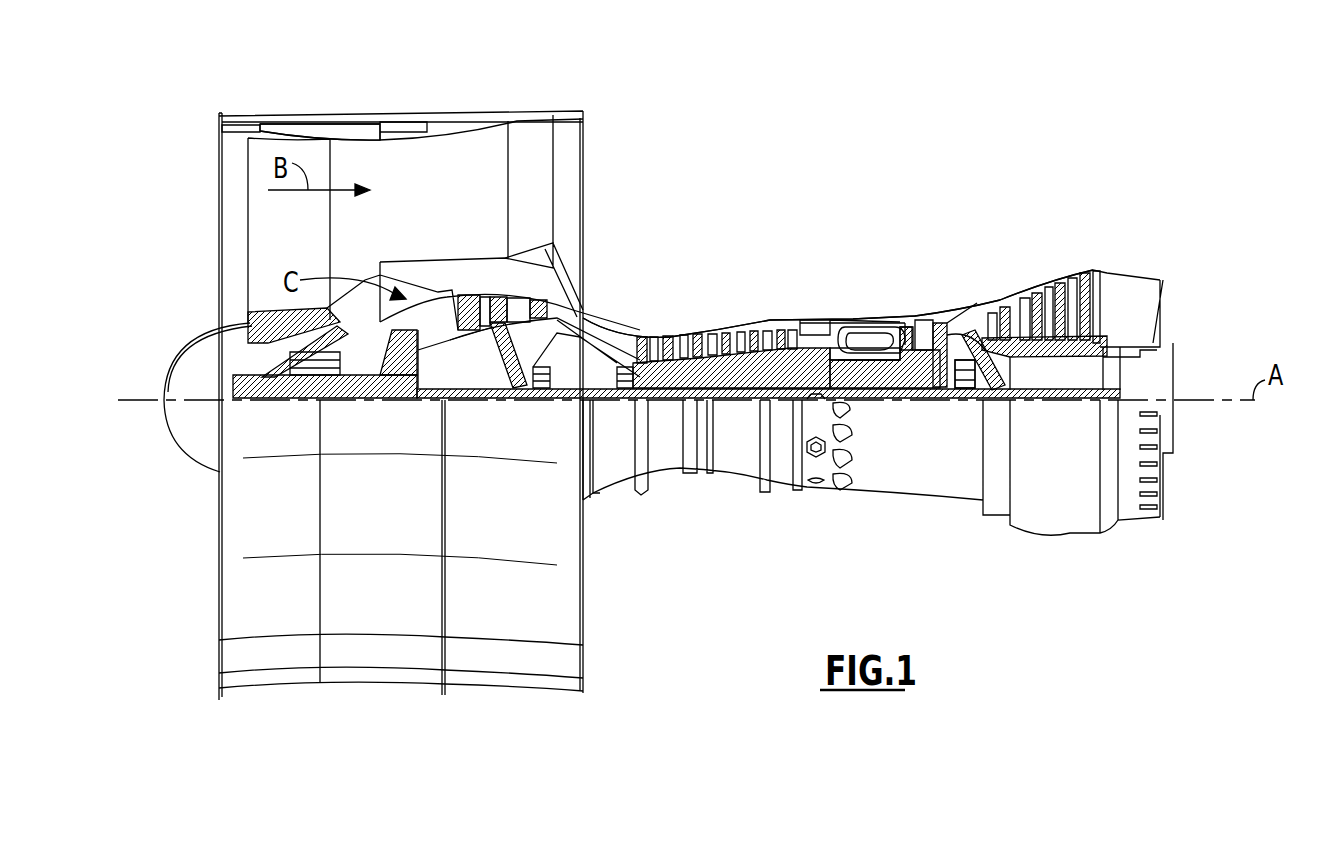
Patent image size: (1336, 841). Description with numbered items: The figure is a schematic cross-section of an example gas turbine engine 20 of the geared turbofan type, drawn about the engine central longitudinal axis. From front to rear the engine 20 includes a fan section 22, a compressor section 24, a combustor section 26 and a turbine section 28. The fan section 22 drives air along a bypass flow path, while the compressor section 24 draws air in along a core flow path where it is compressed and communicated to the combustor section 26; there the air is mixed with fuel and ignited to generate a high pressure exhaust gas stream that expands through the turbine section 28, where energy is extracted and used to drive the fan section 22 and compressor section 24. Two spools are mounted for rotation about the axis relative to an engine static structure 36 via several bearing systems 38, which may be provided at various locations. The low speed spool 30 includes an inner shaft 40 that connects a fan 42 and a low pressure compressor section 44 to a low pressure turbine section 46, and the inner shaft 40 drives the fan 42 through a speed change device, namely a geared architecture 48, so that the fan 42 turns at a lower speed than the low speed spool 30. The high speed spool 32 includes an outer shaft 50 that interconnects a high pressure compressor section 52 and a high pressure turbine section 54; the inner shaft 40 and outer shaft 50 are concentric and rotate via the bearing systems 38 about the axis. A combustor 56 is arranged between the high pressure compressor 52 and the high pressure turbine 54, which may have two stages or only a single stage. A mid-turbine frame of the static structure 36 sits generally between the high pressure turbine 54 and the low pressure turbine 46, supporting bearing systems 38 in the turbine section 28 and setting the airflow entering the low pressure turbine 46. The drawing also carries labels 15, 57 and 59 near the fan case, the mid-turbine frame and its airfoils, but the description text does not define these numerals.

The fan case / nacelle 15 is at (402, 120).
The gas turbine engine 20 is at (872, 157).
The fan section 22 is at (330, 108).
The compressor section 24 is at (630, 310).
The combustor section 26 is at (853, 298).
The turbine section 28 is at (1003, 258).
The low speed spool 30 is at (740, 400).
The high speed spool 32 is at (777, 357).
The engine static structure 36 is at (780, 487).
The bearing systems 38 is at (540, 380).
The inner shaft 40 is at (607, 405).
The fan 42 is at (306, 250).
The low pressure compressor section 44 is at (507, 313).
The low pressure turbine section 46 is at (1050, 287).
The geared architecture 48 is at (407, 380).
The outer shaft 50 is at (863, 382).
The high pressure compressor section 52 is at (717, 360).
The high pressure turbine section 54 is at (920, 318).
The combustor 56 is at (857, 342).
The mid-turbine frame 57 is at (961, 306).
The airfoils / vanes 59 is at (997, 363).